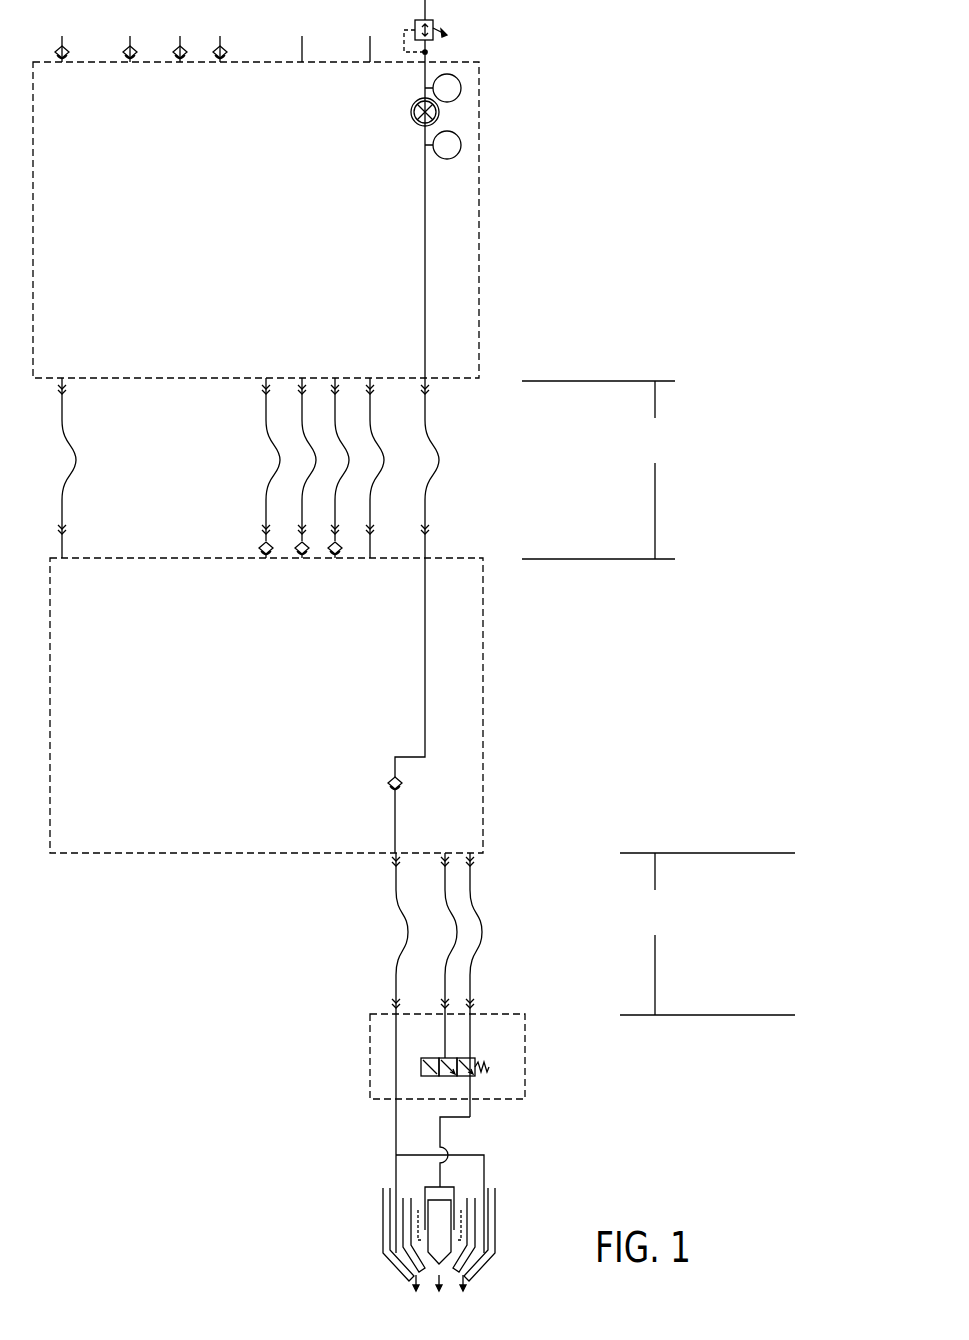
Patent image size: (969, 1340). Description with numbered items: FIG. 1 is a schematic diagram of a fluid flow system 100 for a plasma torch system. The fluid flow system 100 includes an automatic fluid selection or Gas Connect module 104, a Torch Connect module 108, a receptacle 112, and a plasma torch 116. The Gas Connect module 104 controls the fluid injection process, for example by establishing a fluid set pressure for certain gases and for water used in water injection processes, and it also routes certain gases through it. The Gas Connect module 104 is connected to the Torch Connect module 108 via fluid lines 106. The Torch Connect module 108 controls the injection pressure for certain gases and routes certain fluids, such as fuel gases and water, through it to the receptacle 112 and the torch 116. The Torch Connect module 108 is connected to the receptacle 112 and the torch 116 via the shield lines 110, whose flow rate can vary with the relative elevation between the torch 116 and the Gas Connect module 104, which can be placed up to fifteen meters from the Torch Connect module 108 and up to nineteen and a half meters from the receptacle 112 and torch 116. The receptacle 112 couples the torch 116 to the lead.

The fluid flow system 100 is at (576, 65).
The Gas Connect module 104 is at (496, 218).
The fluid lines 106 is at (454, 482).
The Torch Connect module 108 is at (508, 738).
The shield lines 110 is at (538, 886).
The receptacle 112 is at (536, 1053).
The plasma torch 116 is at (518, 1223).